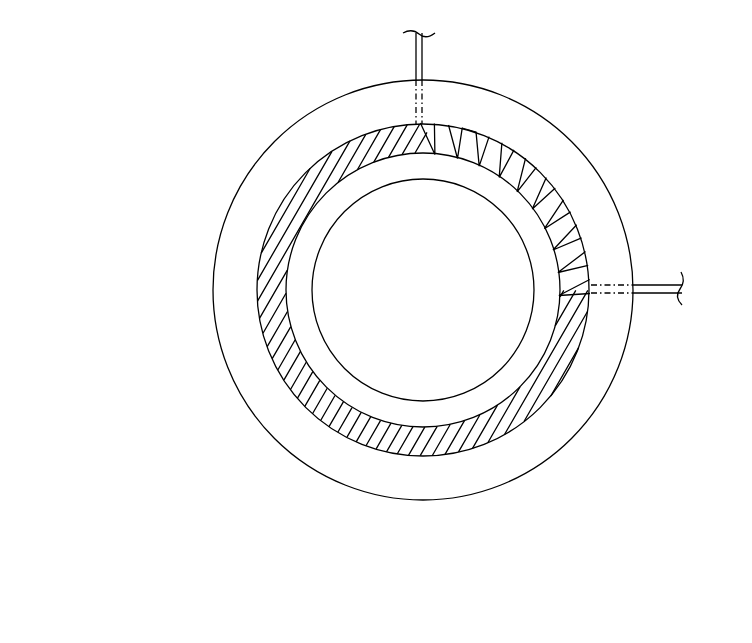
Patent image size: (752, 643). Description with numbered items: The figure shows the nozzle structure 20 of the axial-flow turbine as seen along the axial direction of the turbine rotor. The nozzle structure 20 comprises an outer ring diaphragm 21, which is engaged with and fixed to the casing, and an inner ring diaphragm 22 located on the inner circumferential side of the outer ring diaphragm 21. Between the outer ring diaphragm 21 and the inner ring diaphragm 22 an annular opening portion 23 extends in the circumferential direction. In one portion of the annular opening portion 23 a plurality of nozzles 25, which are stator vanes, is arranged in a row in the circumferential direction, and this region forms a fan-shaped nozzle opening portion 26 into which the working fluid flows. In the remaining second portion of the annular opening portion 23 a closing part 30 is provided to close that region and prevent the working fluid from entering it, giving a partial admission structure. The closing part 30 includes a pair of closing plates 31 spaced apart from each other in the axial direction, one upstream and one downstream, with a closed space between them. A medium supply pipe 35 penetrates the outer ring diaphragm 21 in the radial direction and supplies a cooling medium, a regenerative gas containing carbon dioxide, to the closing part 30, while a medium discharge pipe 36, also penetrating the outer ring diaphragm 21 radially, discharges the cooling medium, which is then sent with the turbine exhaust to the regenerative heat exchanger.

The nozzle structure 20 is at (164, 178).
The outer ring diaphragm 21 is at (292, 146).
The inner ring diaphragm 22 is at (355, 193).
The annular opening portion 23 is at (444, 118).
The nozzles 25 is at (507, 163).
The nozzle opening portion 26 is at (495, 150).
The closing part 30 is at (293, 394).
The closing plates 31 is at (352, 433).
The medium supply pipe 35 is at (413, 55).
The medium discharge pipe 36 is at (655, 287).